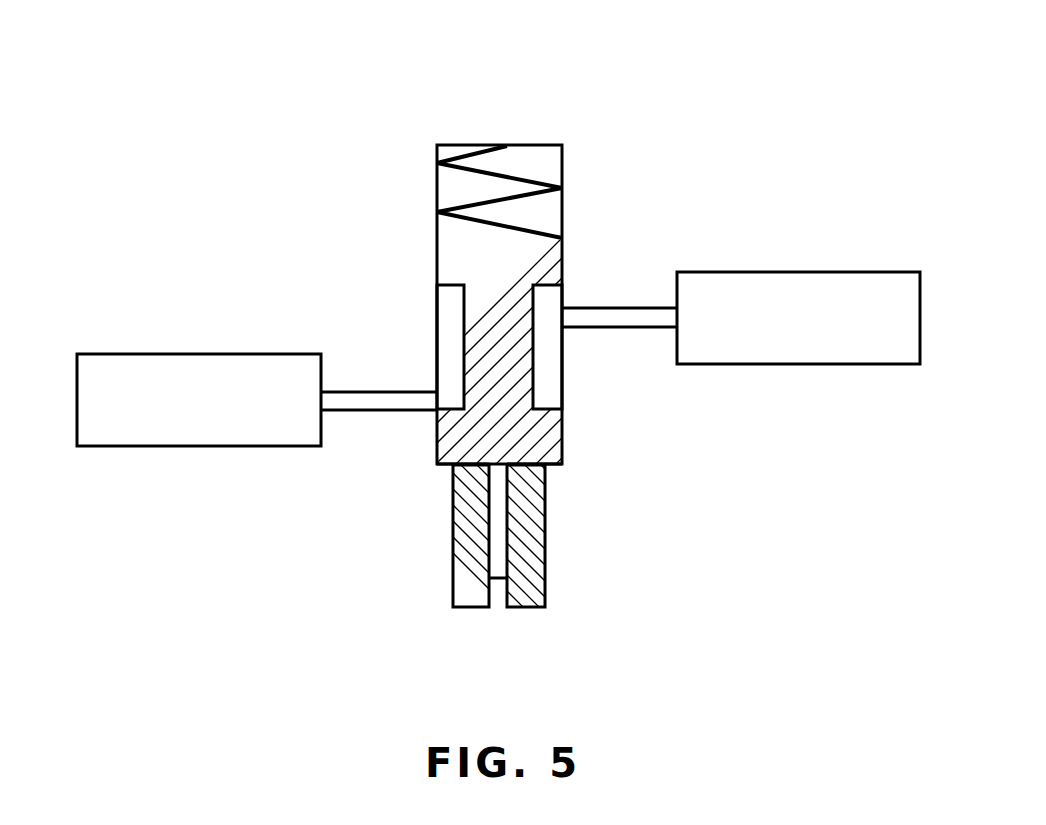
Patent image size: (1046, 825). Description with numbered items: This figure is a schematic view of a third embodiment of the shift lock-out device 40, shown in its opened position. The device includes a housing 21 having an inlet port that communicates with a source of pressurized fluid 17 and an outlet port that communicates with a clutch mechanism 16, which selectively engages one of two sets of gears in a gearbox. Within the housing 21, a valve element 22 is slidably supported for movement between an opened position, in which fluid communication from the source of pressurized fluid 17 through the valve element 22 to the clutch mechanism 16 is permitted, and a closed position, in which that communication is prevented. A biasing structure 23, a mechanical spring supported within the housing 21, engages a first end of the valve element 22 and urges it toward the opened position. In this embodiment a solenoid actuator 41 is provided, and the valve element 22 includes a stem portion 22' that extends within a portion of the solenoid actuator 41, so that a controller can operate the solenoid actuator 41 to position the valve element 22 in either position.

The shift lock-out device 40 is at (383, 96).
The biasing structure 23 is at (515, 173).
The clutch mechanism 16 is at (743, 280).
The source of pressurized fluid 17 is at (263, 364).
The housing 21 is at (565, 378).
The valve element 22 is at (447, 480).
The stem portion 22' is at (622, 550).
The solenoid actuator 41 is at (460, 568).